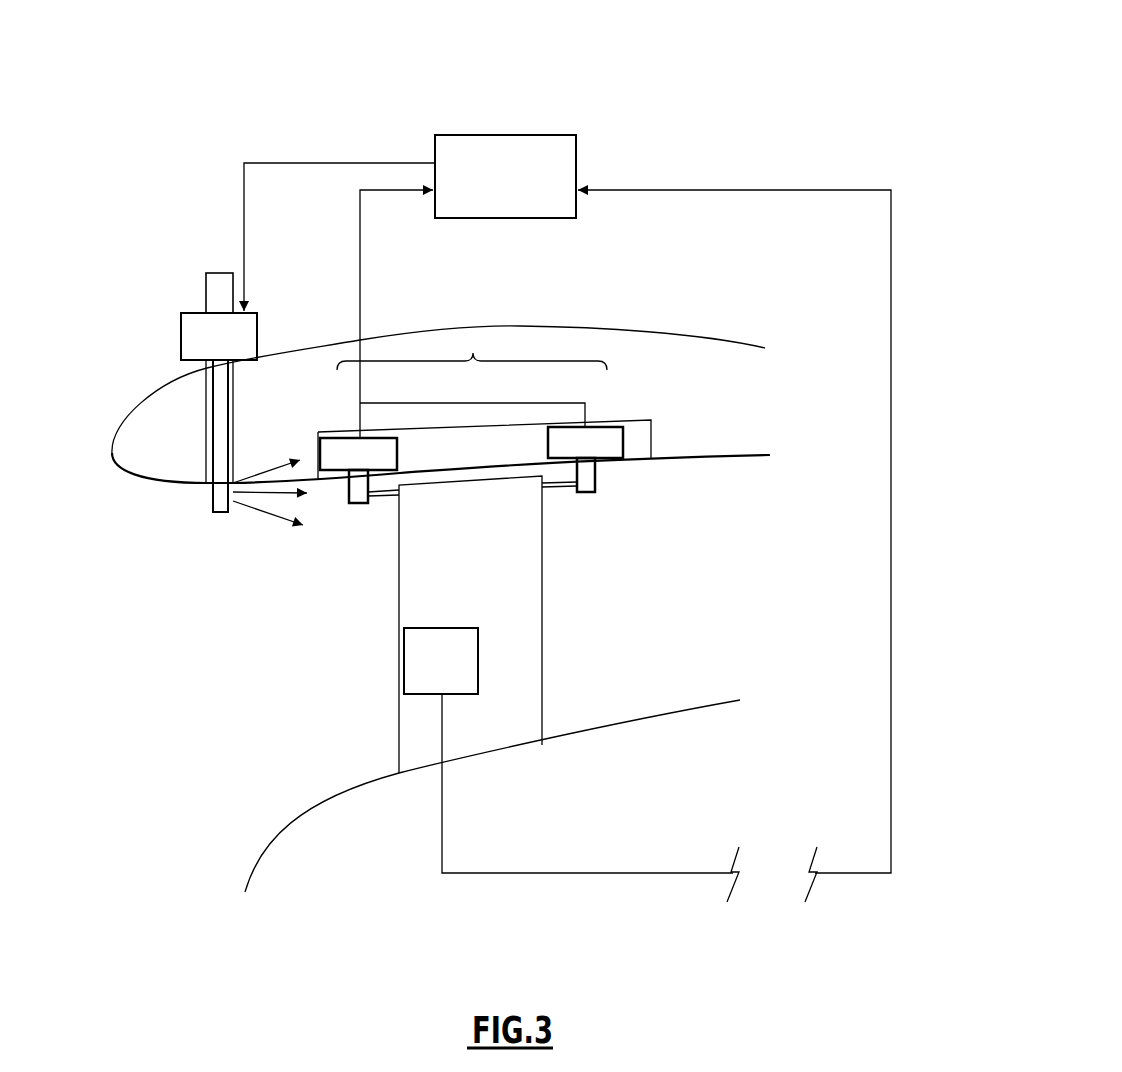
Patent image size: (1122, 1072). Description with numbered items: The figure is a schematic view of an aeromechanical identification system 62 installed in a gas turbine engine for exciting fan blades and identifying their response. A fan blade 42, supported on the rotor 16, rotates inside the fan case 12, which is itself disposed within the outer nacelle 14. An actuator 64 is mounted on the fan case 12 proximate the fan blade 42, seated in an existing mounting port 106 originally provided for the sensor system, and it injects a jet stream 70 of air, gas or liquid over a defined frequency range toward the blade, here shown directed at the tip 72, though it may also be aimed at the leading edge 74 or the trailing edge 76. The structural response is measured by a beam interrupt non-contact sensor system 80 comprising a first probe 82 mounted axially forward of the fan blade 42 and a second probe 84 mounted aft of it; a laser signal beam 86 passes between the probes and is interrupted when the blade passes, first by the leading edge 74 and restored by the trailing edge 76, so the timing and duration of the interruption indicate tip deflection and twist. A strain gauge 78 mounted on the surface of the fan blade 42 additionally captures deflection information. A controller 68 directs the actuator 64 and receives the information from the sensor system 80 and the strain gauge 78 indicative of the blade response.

The aeromechanical identification system 62 is at (664, 96).
The controller 68 is at (521, 207).
The outer nacelle 14 is at (687, 353).
The mounting port 106 is at (204, 454).
The actuator 64 is at (192, 343).
The jet stream 70 is at (262, 527).
The beam interrupt non-contact sensor system 80 is at (473, 353).
The fan case 12 is at (633, 452).
The first probe 82 is at (398, 458).
The second probe 84 is at (629, 437).
The tip 72 is at (474, 478).
The laser signal beam 86 is at (381, 502).
The fan blade 42 is at (522, 587).
The leading edge 74 is at (397, 619).
The trailing edge 76 is at (544, 623).
The strain gauge 78 is at (420, 696).
The rotor 16 is at (297, 851).